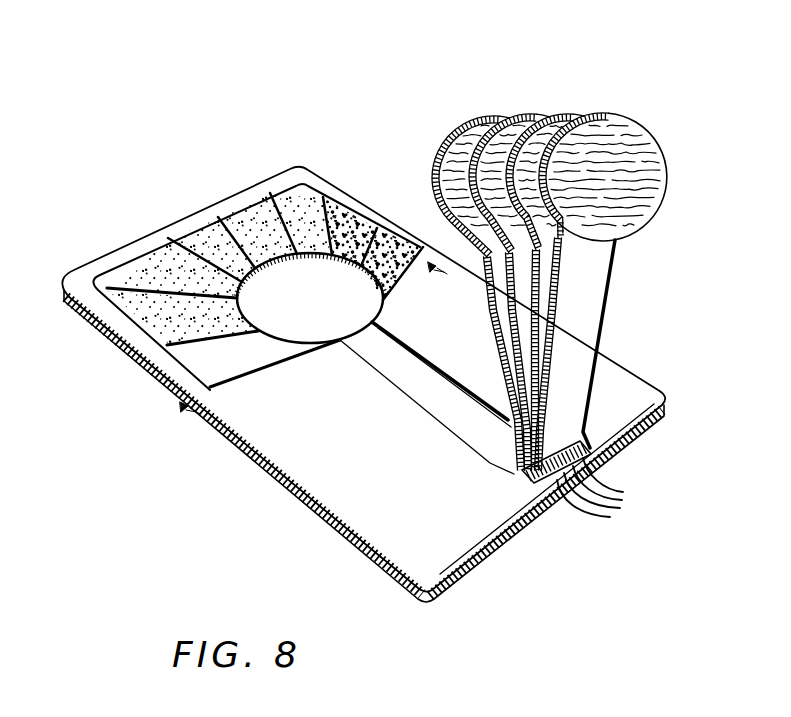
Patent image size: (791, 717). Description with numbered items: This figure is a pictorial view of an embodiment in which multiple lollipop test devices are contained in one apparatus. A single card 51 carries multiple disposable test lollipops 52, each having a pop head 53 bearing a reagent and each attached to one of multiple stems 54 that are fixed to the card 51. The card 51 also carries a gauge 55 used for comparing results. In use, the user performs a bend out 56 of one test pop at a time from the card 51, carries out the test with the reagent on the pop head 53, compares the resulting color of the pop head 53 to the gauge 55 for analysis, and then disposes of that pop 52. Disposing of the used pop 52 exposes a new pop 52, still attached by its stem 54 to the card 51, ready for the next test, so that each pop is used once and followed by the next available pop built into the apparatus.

The card 51 is at (245, 455).
The disposable test lollipop 52 is at (615, 271).
The pop head 53 is at (490, 117).
The stem 54 is at (503, 302).
The gauge 55 is at (152, 268).
The bend out 56 is at (610, 493).